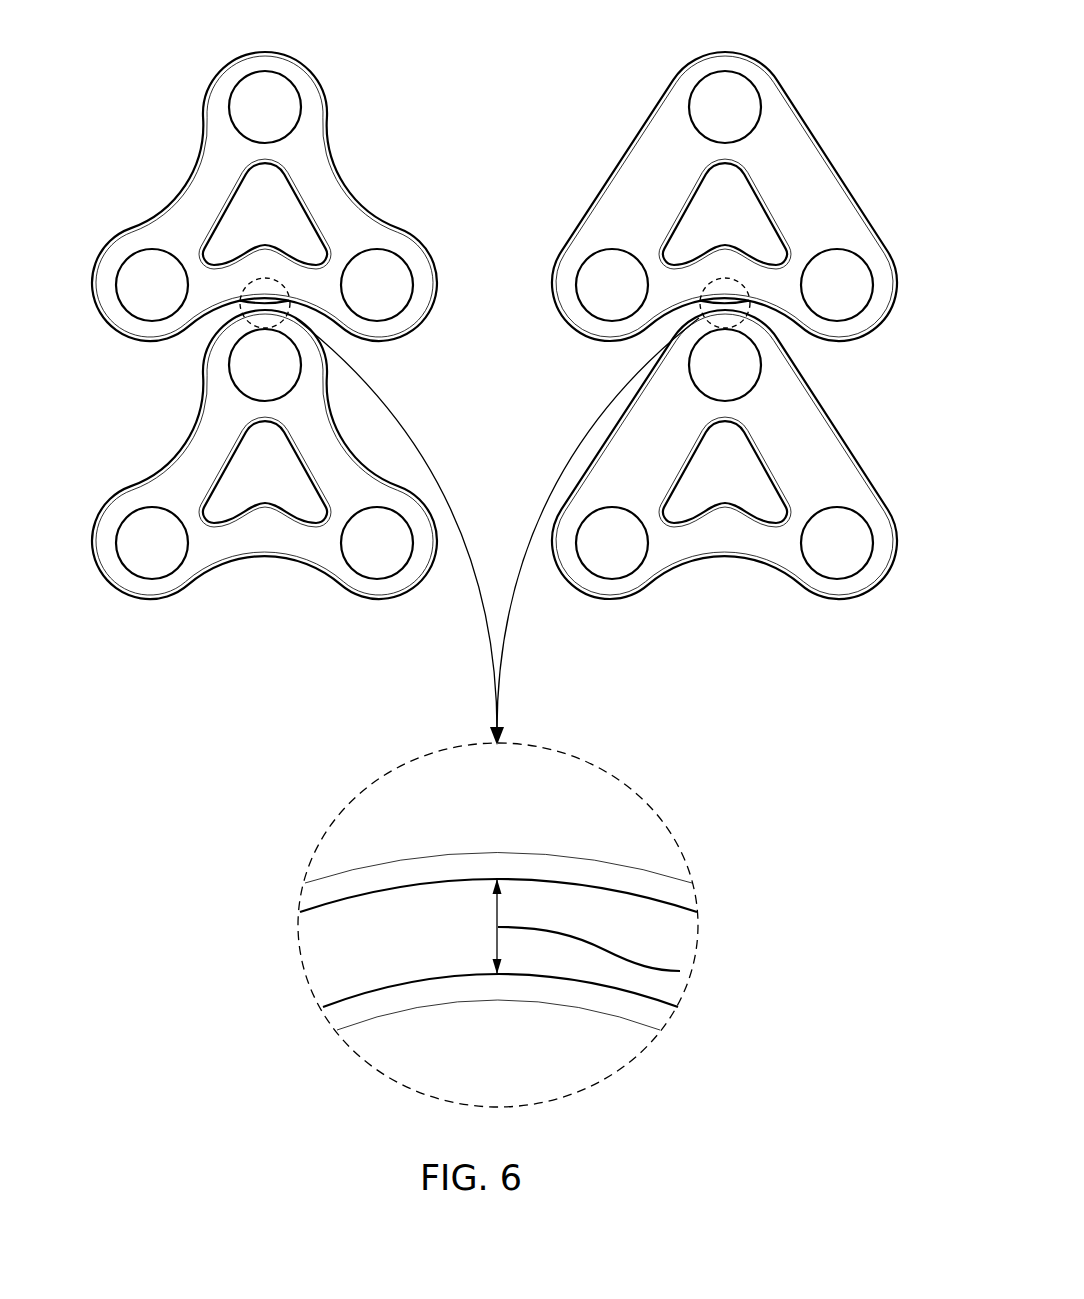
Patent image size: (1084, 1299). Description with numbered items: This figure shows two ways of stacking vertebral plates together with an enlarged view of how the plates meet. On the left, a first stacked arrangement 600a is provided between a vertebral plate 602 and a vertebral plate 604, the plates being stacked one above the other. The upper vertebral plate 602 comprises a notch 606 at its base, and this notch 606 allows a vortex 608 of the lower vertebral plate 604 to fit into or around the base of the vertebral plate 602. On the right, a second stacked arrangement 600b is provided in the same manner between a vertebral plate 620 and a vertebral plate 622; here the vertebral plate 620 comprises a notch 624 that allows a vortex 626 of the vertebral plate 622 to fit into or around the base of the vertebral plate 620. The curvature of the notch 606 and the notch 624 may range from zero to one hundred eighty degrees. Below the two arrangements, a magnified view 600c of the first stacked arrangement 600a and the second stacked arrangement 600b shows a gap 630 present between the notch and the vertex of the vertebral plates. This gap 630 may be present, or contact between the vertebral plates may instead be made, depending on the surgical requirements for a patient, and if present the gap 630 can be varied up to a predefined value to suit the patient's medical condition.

The first stacked arrangement 600a is at (140, 56).
The second stacked arrangement 600b is at (835, 42).
The magnified view 600c is at (535, 925).
The vertebral plate 602 is at (188, 178).
The vertebral plate 604 is at (100, 512).
The notch 606 is at (242, 312).
The vortex 608 is at (292, 296).
The vertebral plate 620 is at (837, 162).
The vertebral plate 622 is at (835, 428).
The notch 624 is at (702, 312).
The vortex 626 is at (728, 306).
The gap 630 is at (680, 971).